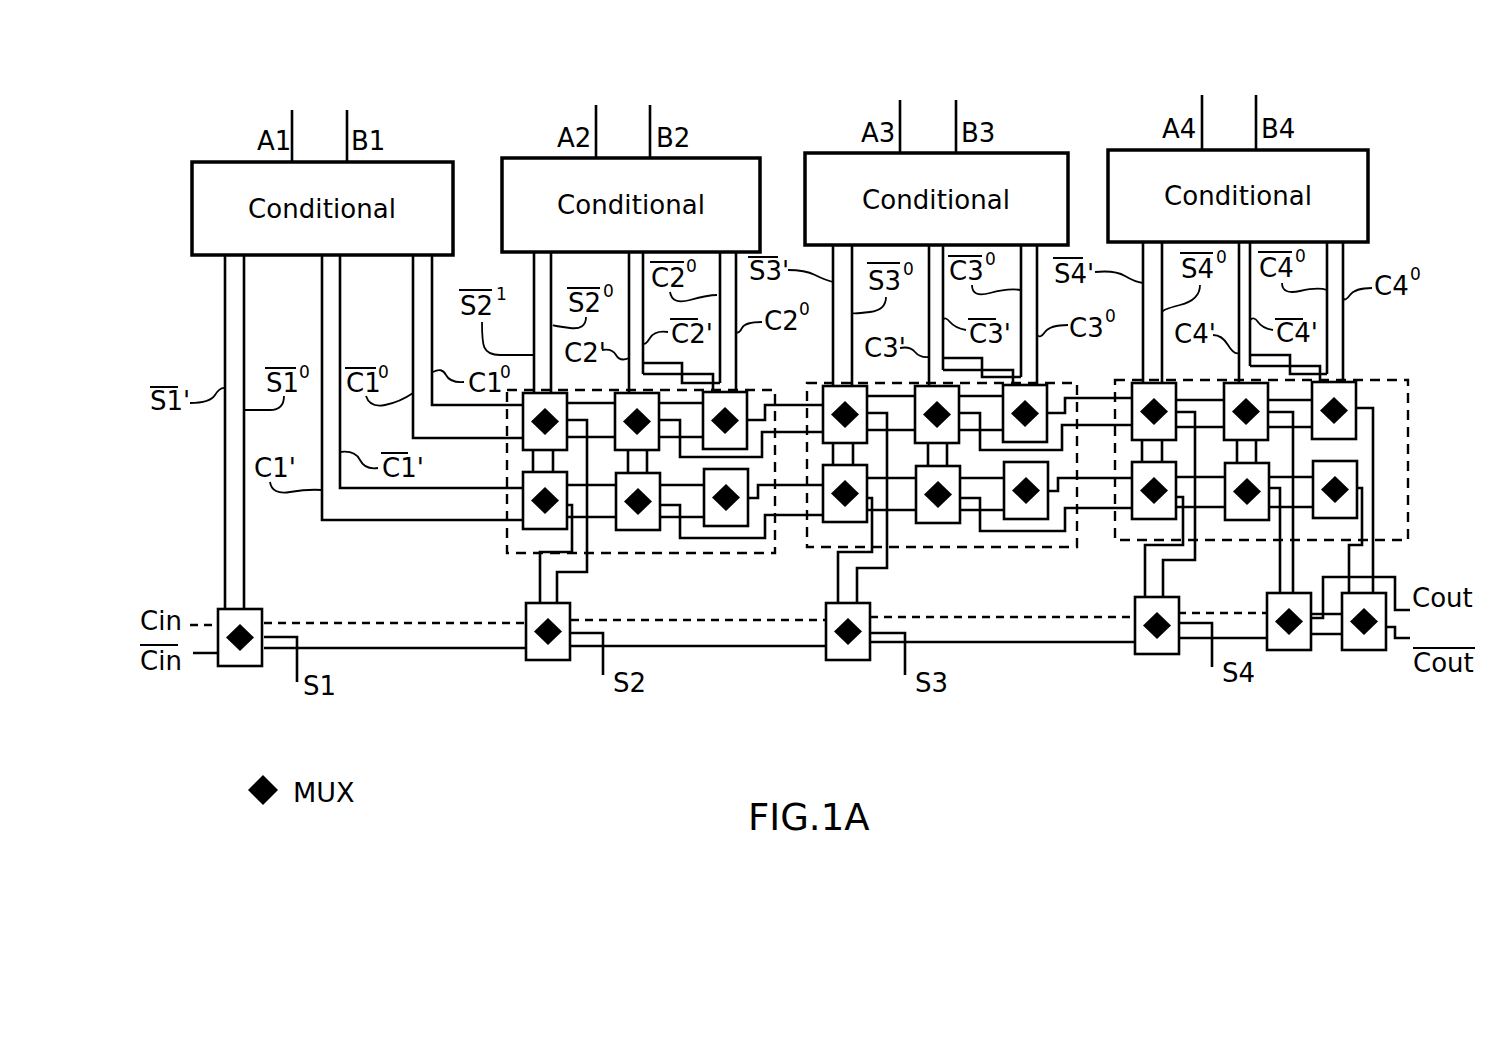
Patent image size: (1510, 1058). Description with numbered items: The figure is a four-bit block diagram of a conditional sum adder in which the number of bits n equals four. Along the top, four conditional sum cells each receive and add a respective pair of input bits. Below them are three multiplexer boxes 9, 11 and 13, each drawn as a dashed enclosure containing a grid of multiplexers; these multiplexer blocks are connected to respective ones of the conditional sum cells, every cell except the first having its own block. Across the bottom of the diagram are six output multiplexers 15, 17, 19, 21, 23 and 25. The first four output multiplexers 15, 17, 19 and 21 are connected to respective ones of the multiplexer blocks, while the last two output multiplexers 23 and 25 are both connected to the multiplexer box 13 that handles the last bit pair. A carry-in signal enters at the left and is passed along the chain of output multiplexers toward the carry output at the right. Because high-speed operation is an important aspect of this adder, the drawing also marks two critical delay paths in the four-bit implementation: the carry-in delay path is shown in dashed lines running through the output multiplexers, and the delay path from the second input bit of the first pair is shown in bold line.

The multiplexer box 9 is at (507, 540).
The multiplexer box 11 is at (1000, 547).
The multiplexer box 13 is at (1410, 458).
The output multiplexer 15 is at (240, 668).
The output multiplexer 17 is at (540, 664).
The output multiplexer 19 is at (840, 664).
The output multiplexer 21 is at (1148, 655).
The output multiplexer 23 is at (1290, 654).
The output multiplexer 25 is at (1360, 652).